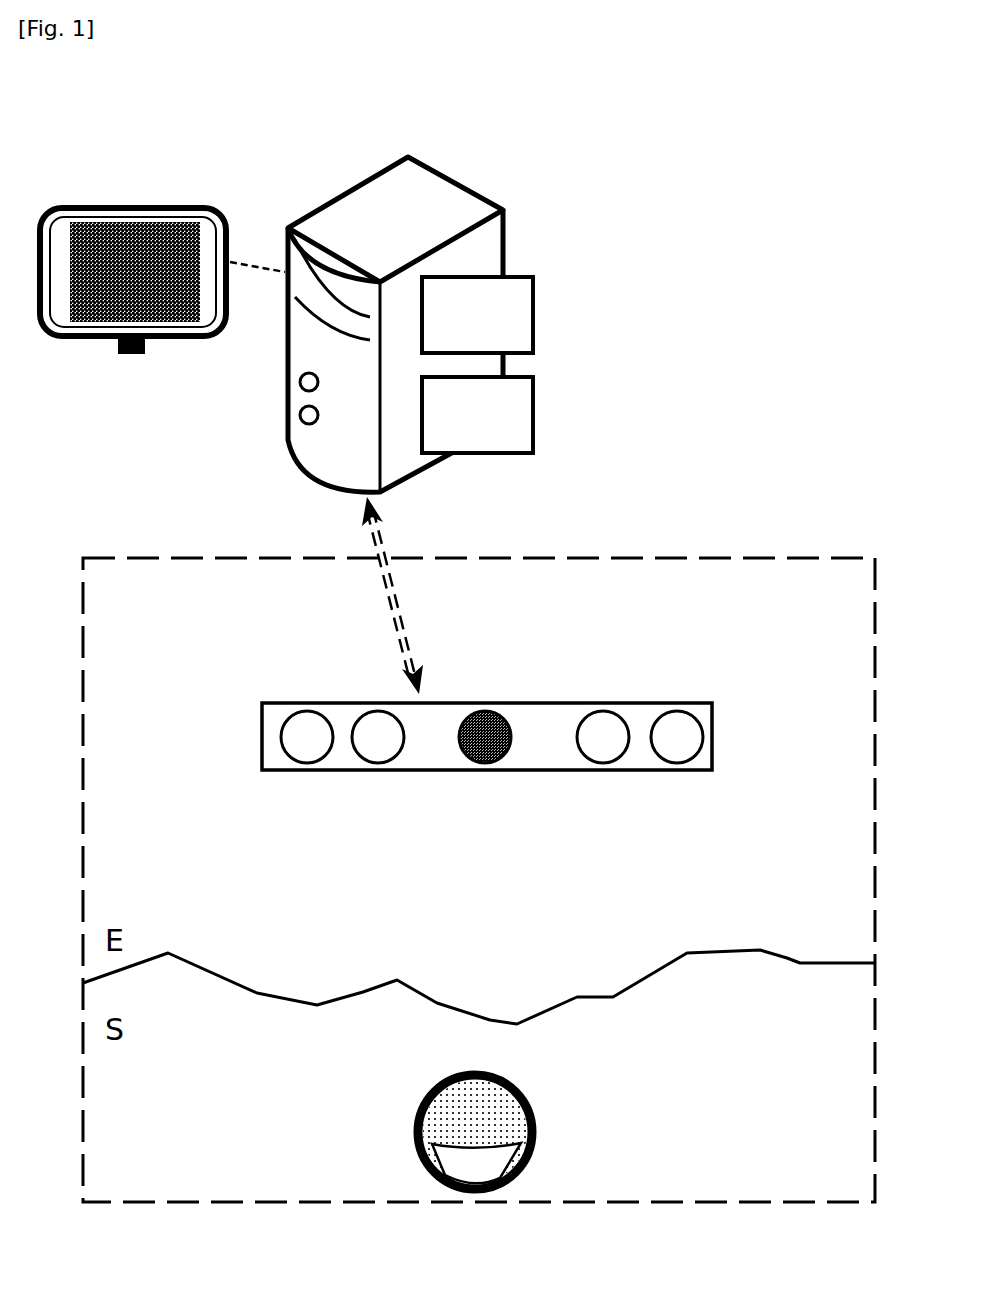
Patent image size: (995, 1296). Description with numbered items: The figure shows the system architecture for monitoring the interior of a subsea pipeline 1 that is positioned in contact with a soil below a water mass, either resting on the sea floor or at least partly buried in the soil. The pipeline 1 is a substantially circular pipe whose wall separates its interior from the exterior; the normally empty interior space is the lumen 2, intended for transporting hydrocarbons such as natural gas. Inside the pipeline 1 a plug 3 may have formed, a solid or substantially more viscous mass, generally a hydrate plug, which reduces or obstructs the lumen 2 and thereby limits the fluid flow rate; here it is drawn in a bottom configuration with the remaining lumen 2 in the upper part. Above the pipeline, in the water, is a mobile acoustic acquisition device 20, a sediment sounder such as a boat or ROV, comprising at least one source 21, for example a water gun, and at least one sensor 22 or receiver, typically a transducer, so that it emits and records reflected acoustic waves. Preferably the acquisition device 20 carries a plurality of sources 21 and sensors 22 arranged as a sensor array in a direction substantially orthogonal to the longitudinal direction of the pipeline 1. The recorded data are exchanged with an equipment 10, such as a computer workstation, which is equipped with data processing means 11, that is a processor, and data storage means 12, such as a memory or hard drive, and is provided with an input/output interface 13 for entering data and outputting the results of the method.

The pipeline 1 is at (437, 1112).
The lumen 2 is at (488, 1108).
The plug 3 is at (487, 1163).
The equipment 10 is at (348, 190).
The data processing means 11 is at (535, 316).
The data storage means 12 is at (537, 417).
The input/output interface 13 is at (135, 205).
The mobile acoustic acquisition device 20 is at (712, 698).
The source 21 is at (507, 768).
The sensor 22 is at (357, 757).